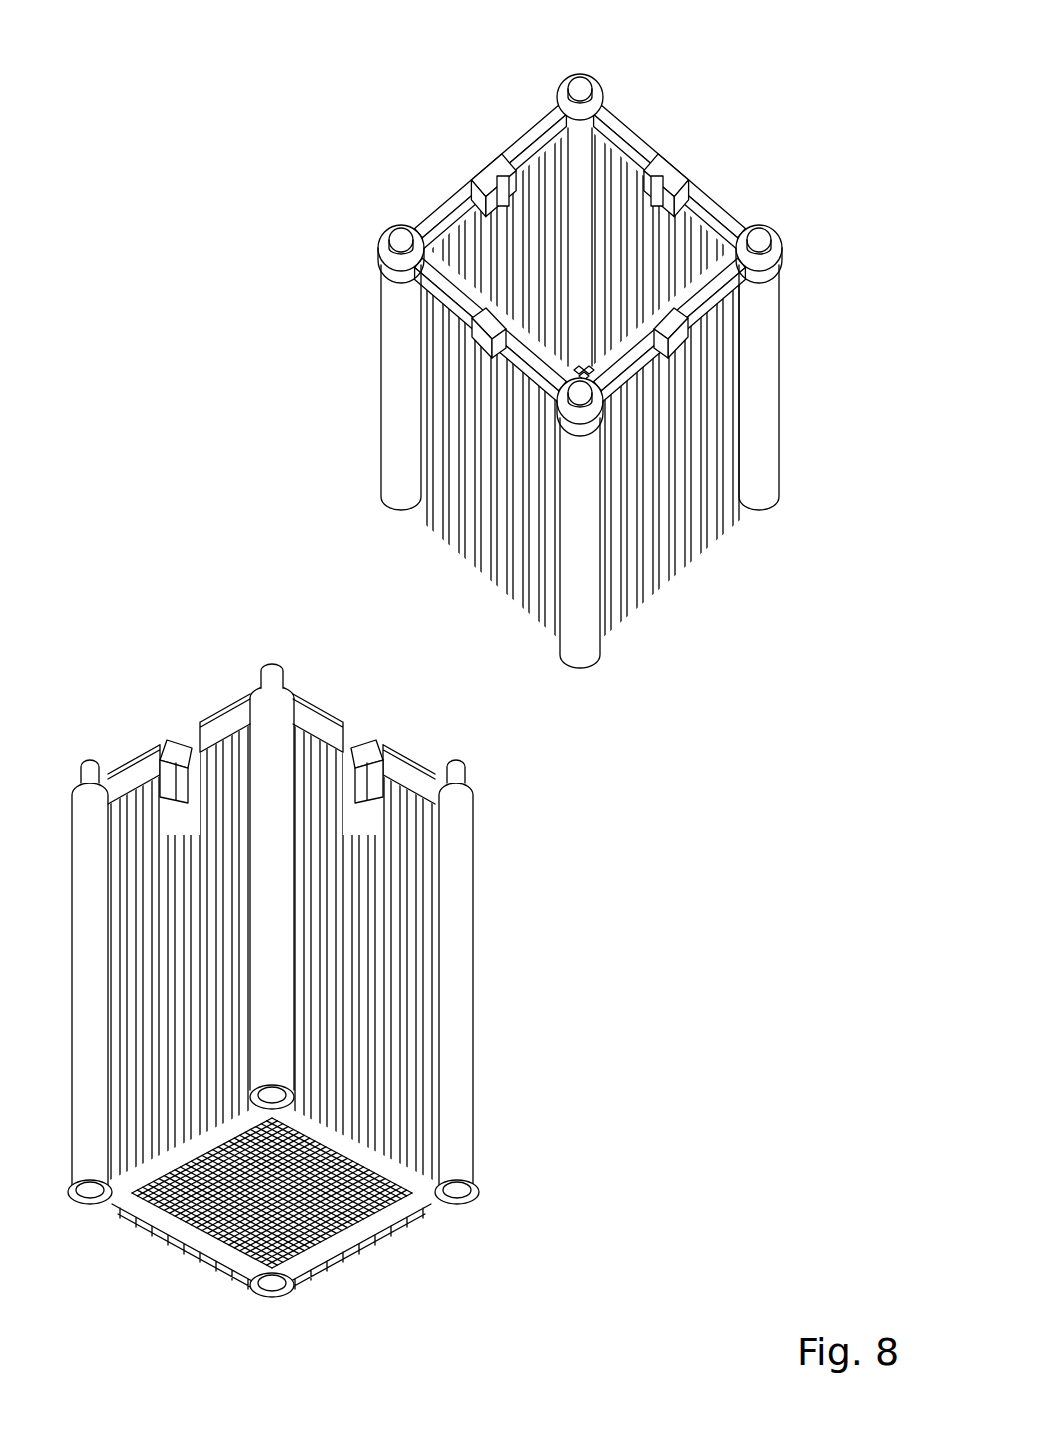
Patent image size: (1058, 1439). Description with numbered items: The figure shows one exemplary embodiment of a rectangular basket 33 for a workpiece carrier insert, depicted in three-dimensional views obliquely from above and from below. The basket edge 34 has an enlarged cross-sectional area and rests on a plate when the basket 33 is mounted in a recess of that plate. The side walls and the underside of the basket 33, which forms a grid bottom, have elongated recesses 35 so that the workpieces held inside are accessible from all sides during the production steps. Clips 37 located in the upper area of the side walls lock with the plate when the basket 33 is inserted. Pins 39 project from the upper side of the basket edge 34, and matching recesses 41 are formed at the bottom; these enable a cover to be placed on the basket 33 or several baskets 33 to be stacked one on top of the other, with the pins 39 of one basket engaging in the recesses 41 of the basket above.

The basket 33 is at (728, 130).
The basket edge 34 is at (432, 220).
The elongated recesses 35 is at (542, 165).
The clips 37 is at (483, 362).
The pins 39 is at (578, 78).
The recesses 41 is at (284, 1096).